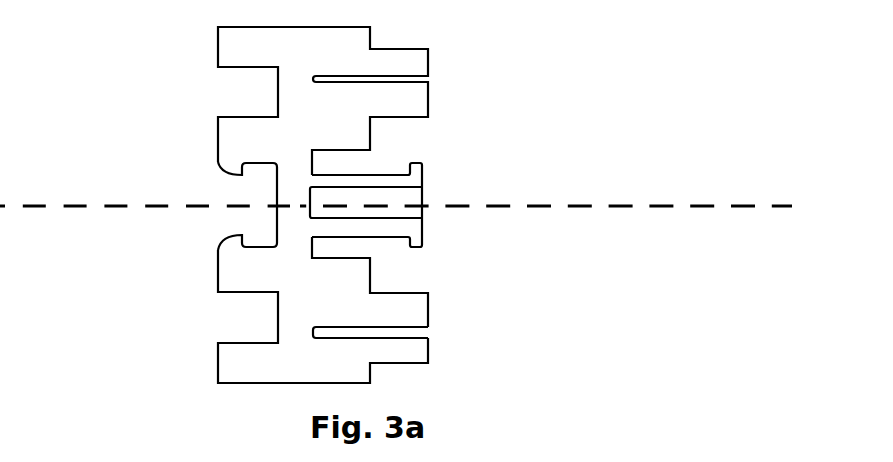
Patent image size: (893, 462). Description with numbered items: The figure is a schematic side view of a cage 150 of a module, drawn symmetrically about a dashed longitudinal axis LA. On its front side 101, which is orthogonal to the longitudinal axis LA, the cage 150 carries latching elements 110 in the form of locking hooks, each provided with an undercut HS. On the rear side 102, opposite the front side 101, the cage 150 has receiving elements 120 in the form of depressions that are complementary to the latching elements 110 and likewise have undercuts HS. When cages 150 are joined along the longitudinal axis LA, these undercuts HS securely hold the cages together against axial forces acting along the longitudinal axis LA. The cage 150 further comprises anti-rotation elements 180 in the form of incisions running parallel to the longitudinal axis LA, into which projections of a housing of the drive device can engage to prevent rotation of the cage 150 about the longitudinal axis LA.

The front side 101 is at (432, 103).
The rear side 102 is at (217, 268).
The latching element 110 is at (435, 234).
The receiving element 120 is at (241, 192).
The cage 150 is at (428, 357).
The anti-rotation element 180 is at (433, 332).
The undercut HS is at (400, 162).
The longitudinal axis LA is at (700, 203).